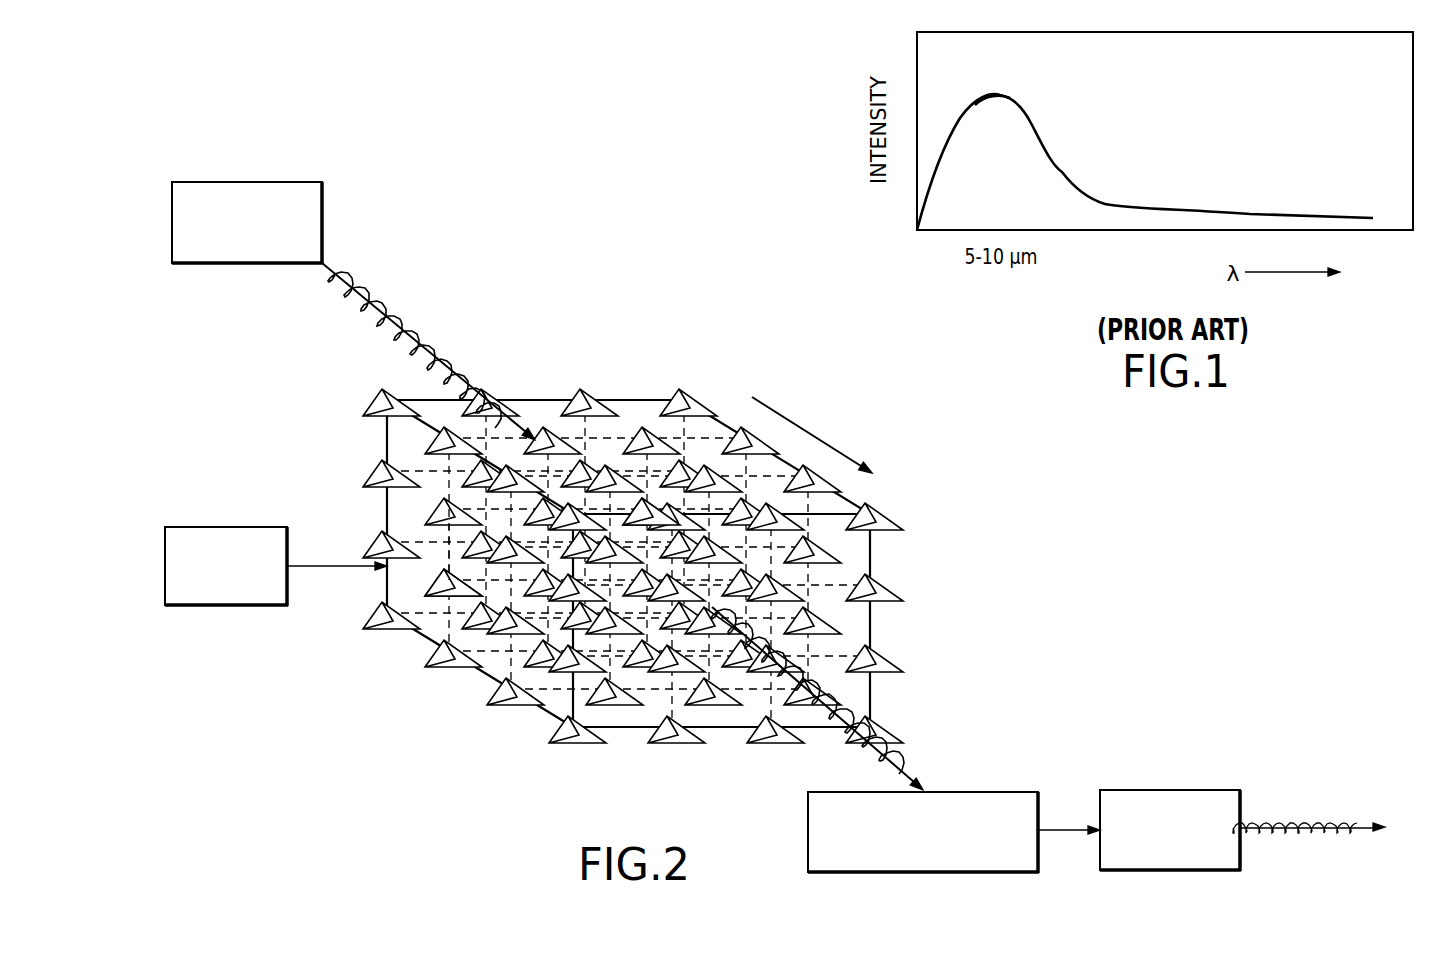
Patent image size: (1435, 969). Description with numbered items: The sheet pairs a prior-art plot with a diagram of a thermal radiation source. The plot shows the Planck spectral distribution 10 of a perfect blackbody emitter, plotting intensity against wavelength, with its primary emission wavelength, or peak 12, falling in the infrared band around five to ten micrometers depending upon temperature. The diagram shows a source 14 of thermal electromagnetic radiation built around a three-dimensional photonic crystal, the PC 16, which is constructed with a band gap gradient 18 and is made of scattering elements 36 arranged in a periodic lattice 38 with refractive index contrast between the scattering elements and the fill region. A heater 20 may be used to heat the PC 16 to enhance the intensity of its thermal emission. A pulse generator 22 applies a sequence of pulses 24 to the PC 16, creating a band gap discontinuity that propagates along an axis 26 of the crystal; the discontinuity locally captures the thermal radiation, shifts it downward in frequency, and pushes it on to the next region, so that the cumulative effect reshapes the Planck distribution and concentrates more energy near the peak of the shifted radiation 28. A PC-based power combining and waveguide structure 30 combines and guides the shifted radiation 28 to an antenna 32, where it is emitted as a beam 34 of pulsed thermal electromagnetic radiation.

In FIG. 1, the Planck spectral distribution 10 is at (1193, 146).
In FIG. 1, the primary emission wavelength (peak) 12 is at (1005, 93).
In FIG. 2, the source of thermal electromagnetic radiation 14 is at (298, 414).
In FIG. 2, the 3D PC 16 is at (481, 673).
In FIG. 2, the band gap gradient 18 is at (837, 448).
In FIG. 2, the heater 20 is at (215, 527).
In FIG. 2, the pulse generator 22 is at (312, 182).
In FIG. 2, the pulses 24 is at (470, 353).
In FIG. 2, the axis 26 is at (634, 530).
In FIG. 2, the shifted radiation (peak of radiation) 28 is at (900, 756).
In FIG. 2, the power combining and waveguide structure 30 is at (1000, 792).
In FIG. 2, the antenna 32 is at (1180, 790).
In FIG. 2, the beam 34 is at (1296, 825).
In FIG. 2, the scattering elements 36 is at (440, 593).
In FIG. 2, the periodic lattice 38 is at (436, 550).